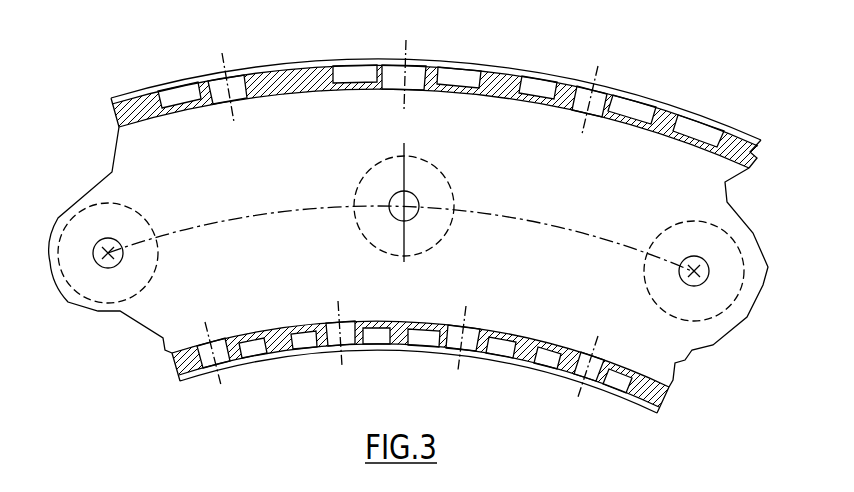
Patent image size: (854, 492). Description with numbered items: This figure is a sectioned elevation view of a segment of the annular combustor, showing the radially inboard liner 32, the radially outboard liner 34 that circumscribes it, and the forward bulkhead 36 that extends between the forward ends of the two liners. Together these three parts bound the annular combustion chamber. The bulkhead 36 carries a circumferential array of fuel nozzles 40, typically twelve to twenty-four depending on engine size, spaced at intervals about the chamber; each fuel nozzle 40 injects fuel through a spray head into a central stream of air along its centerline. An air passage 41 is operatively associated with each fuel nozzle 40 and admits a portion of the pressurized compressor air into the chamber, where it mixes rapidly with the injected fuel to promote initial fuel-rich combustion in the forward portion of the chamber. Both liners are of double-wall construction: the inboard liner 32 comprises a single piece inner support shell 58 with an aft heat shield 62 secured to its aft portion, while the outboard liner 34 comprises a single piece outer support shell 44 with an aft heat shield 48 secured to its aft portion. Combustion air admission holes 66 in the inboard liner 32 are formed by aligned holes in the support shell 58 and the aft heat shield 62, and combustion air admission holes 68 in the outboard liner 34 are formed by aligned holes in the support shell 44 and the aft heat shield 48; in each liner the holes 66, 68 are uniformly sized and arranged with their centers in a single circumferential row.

The inboard liner 32 is at (420, 346).
The outboard liner 34 is at (436, 105).
The forward bulkhead 36 is at (447, 154).
The fuel nozzle 40 is at (123, 256).
The air passage 41 is at (158, 233).
The outer support shell 44 is at (327, 61).
The aft heat shield 48 is at (287, 95).
The inner support shell 58 is at (305, 355).
The aft heat shield 62 is at (304, 322).
The combustion air admission holes 66 is at (216, 342).
The combustion air admission holes 68 is at (243, 101).